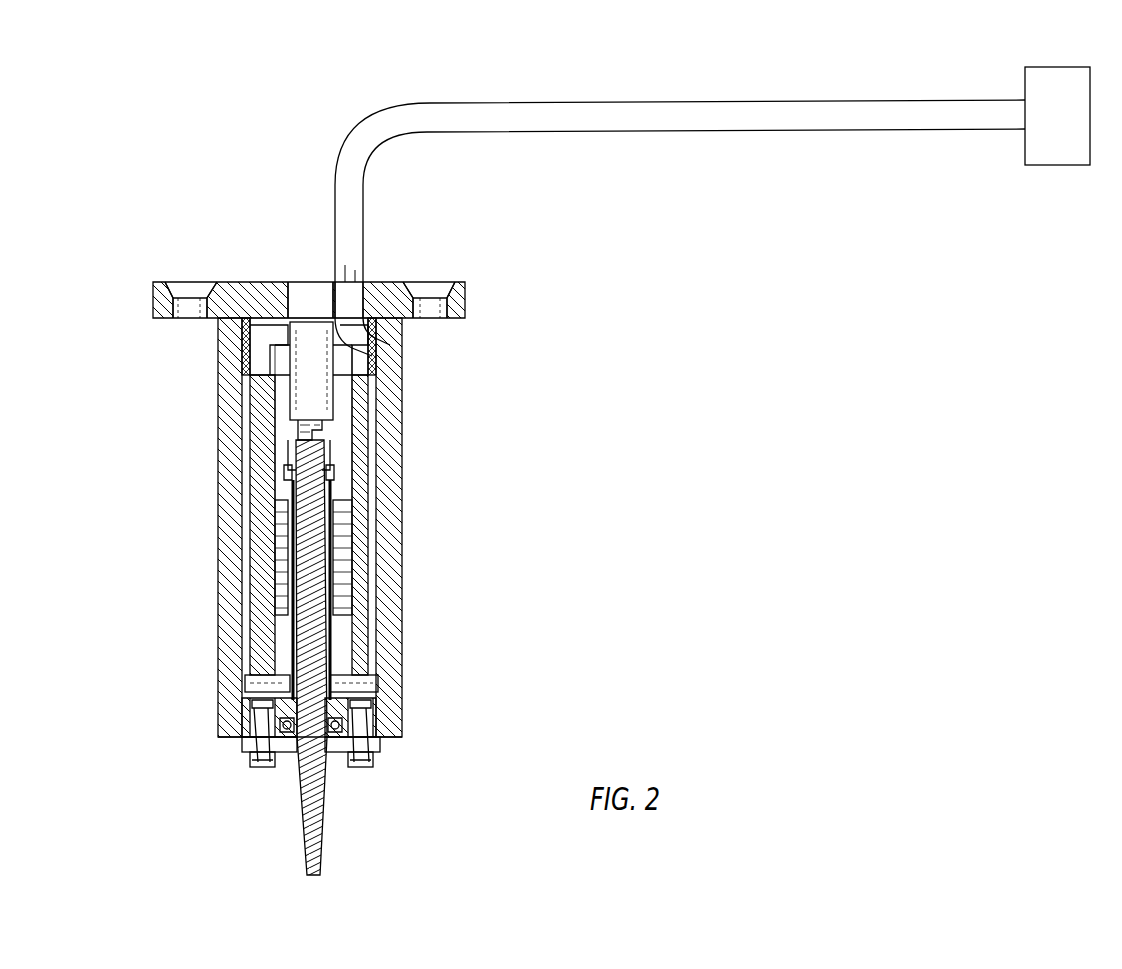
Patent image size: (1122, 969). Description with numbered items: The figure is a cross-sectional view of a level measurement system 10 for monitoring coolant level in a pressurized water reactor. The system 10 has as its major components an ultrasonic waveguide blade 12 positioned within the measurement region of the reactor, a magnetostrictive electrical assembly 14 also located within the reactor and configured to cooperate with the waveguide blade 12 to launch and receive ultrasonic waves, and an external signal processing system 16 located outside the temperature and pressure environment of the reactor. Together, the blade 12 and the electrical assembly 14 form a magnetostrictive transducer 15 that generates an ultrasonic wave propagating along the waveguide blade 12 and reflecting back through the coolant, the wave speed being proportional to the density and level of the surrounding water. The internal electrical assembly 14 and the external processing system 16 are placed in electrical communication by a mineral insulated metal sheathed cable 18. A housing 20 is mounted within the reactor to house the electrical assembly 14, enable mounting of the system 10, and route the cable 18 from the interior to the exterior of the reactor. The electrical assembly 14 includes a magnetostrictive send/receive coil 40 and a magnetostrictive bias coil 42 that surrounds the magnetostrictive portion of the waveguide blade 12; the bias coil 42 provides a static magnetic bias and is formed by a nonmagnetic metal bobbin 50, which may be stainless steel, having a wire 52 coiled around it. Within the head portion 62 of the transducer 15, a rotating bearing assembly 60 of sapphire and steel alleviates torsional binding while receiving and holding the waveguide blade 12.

The level measurement system 10 is at (712, 200).
The ultrasonic waveguide blade 12 is at (316, 780).
The magnetostrictive electrical assembly 14 is at (200, 538).
The magnetostrictive transducer 15 is at (715, 310).
The external signal processing system 16 is at (1046, 127).
The mineral insulated metal sheathed cable 18 is at (693, 131).
The housing 20 is at (402, 493).
The magnetostrictive send/receive coil 40 is at (338, 398).
The magnetostrictive bias coil 42 is at (354, 477).
The nonmagnetic metal bobbin 50 is at (352, 411).
The wire 52 is at (365, 608).
The rotating bearing assembly 60 is at (322, 482).
The head portion 62 is at (513, 353).